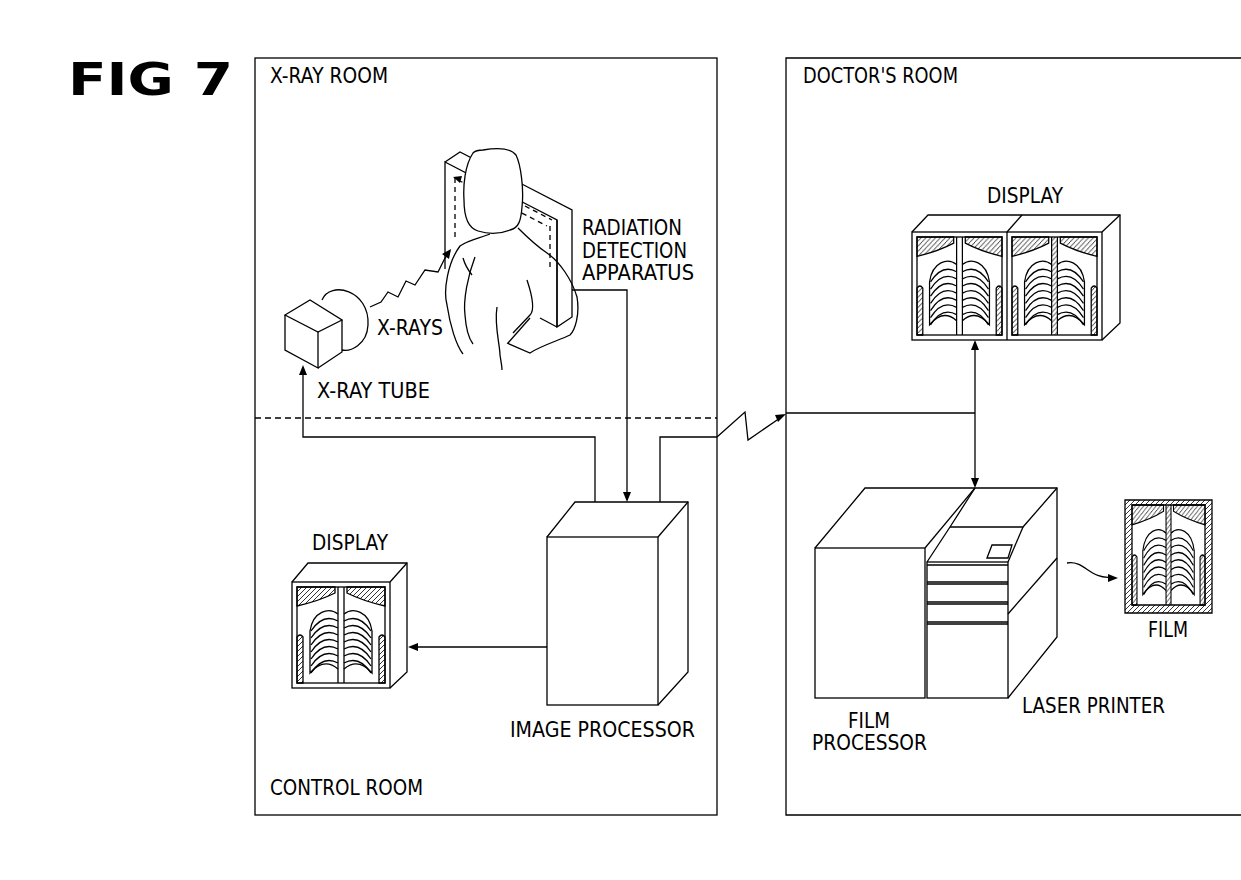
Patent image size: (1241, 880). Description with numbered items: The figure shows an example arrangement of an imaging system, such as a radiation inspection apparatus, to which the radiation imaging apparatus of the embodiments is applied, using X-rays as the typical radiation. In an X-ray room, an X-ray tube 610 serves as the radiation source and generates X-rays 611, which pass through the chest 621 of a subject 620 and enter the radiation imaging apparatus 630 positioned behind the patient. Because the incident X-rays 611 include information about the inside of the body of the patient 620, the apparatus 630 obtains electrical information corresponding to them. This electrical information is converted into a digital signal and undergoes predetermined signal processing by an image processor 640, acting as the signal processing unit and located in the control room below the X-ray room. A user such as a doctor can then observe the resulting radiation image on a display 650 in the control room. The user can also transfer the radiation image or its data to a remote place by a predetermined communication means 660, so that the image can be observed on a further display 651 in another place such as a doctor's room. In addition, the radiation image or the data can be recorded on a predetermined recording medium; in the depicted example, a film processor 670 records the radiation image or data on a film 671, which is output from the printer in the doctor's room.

The X-ray tube 610 is at (293, 303).
The X-rays 611 is at (392, 281).
The subject 620 is at (498, 150).
The chest 621 is at (500, 358).
The radiation imaging apparatus 630 is at (537, 217).
The image processor 640 is at (547, 673).
The display 650 is at (408, 600).
The display 651 is at (943, 222).
The communication means 660 is at (752, 407).
The film processor 670 is at (905, 486).
The film 671 is at (1168, 500).